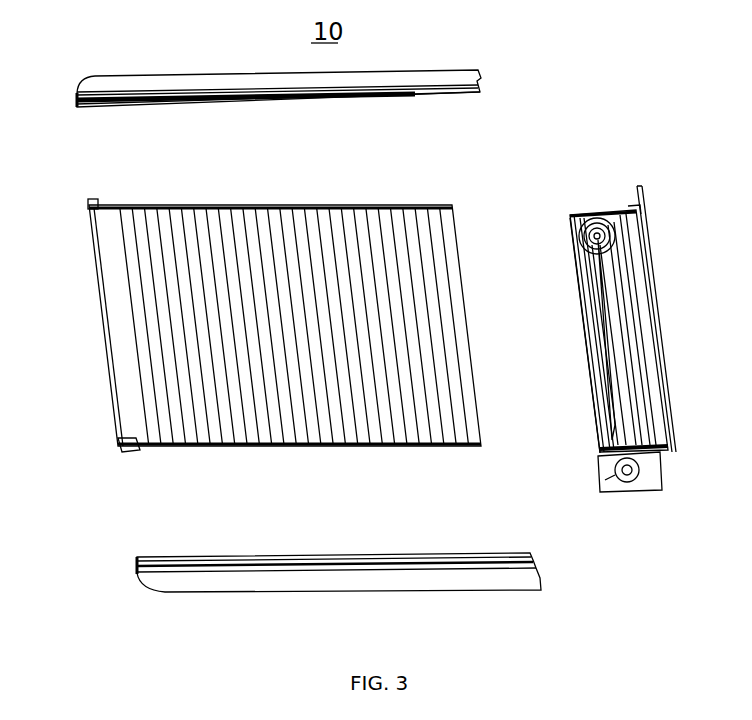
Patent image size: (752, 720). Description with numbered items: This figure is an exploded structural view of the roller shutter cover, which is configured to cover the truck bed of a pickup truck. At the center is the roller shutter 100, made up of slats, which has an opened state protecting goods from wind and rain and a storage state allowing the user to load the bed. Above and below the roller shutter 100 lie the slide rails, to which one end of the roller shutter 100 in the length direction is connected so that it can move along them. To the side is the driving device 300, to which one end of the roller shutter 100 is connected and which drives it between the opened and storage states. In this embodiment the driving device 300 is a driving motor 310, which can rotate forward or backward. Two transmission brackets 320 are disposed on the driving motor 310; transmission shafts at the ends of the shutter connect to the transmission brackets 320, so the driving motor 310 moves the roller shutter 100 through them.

The roller shutter 100 is at (130, 362).
The driving device 300 is at (656, 369).
The driving motor 310 is at (626, 487).
The transmission bracket 320 is at (628, 275).